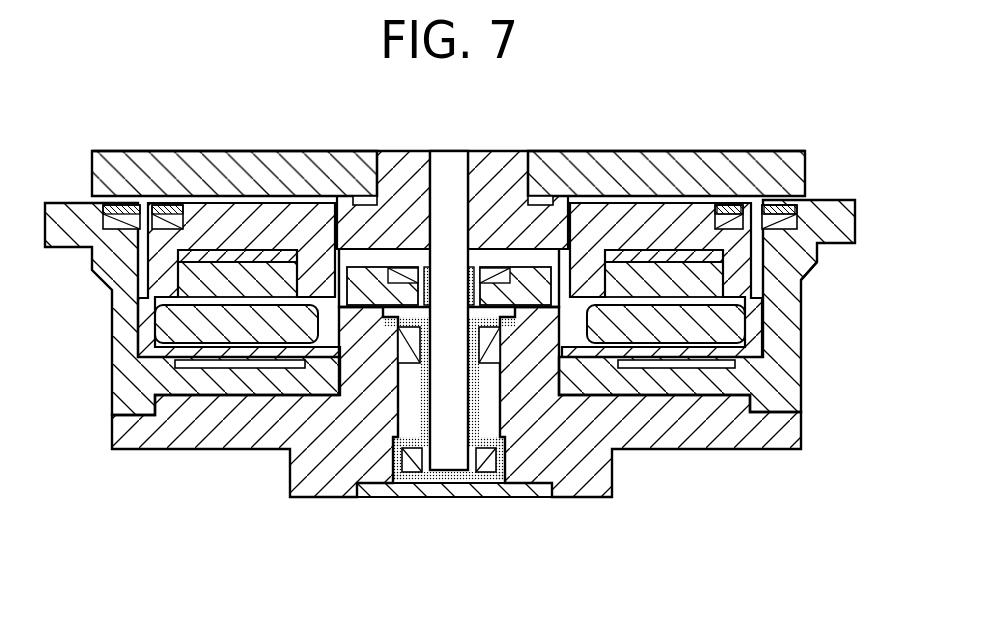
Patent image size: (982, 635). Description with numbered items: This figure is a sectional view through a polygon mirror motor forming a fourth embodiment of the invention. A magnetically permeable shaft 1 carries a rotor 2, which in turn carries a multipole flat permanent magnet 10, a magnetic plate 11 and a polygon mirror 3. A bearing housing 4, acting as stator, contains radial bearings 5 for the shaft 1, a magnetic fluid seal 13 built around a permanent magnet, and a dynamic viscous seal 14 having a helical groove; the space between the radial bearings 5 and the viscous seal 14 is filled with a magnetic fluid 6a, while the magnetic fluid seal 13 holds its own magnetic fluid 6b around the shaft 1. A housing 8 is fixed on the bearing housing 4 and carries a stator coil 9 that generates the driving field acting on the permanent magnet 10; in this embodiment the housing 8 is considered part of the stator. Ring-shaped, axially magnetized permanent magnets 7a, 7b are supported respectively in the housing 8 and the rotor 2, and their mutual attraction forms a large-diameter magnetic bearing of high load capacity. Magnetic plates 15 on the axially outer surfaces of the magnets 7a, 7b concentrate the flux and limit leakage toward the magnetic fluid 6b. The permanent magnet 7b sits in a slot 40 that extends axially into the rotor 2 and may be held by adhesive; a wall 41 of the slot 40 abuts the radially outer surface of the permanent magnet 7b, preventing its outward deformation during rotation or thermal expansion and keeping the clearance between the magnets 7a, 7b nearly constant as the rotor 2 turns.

The shaft 1 is at (445, 170).
The rotor 2 is at (158, 257).
The polygon mirror 3 is at (137, 162).
The bearing housing 4 is at (303, 458).
The radial bearings 5 is at (498, 457).
The magnetic fluid 6a is at (405, 397).
The magnetic fluid 6b is at (378, 240).
The permanent magnet 7a is at (122, 214).
The permanent magnet 7b is at (168, 214).
The housing 8 is at (126, 357).
The stator coil 9 is at (227, 325).
The permanent magnet 10 is at (213, 266).
The magnetic plate 11 is at (235, 253).
The magnetic fluid seal 13 is at (497, 267).
The dynamic viscous seal 14 is at (528, 273).
The magnetic plates 15 is at (774, 208).
The slot 40 is at (792, 318).
The wall 41 is at (805, 268).